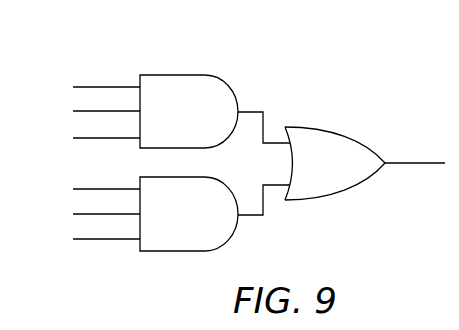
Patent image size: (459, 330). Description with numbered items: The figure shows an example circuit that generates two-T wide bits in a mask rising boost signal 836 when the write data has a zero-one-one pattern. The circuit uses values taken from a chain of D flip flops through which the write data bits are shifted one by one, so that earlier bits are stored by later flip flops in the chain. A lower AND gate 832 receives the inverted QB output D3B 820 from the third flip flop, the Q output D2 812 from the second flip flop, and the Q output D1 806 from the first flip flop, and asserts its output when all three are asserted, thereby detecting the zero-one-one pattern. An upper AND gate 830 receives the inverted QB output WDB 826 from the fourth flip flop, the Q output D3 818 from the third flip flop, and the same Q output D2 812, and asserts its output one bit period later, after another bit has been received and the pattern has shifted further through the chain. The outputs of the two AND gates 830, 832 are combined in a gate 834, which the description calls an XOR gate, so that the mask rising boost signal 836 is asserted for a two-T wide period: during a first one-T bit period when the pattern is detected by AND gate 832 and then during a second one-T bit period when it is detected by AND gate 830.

The AND gate 830 is at (170, 73).
The AND gate 832 is at (172, 252).
The XOR gate 834 is at (315, 126).
The mask rising boost signal 836 is at (400, 165).
The inverted QB output WDB 826 is at (77, 87).
The Q output D3 818 is at (77, 111).
The Q output D2 812 is at (77, 138).
The inverted QB output D3B 820 is at (77, 189).
The Q output D1 806 is at (77, 239).